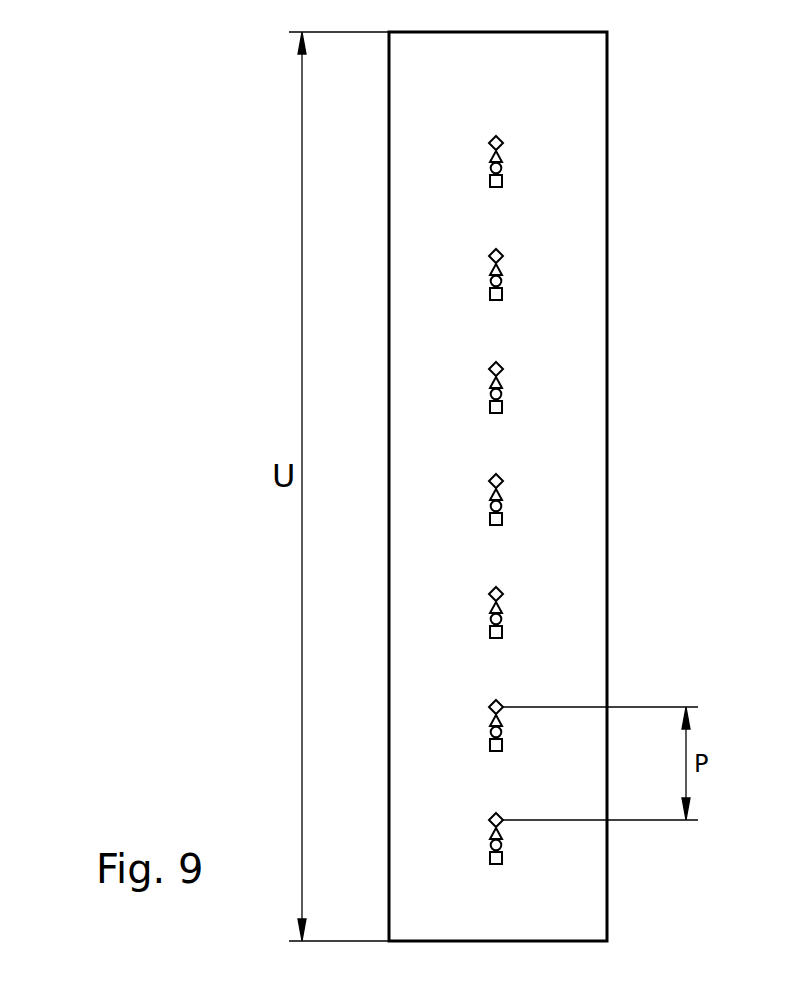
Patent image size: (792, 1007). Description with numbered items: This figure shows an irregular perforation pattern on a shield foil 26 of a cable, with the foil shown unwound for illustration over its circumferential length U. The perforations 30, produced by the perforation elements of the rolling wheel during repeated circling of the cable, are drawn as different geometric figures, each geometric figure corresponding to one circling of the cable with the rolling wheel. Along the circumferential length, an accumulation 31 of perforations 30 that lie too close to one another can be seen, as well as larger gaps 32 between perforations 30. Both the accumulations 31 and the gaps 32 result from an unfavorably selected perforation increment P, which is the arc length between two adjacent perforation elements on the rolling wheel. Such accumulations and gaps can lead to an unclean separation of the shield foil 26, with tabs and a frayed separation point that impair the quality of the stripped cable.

The shield foil 26 is at (607, 119).
The perforations 30 is at (520, 260).
The accumulation of perforations 31 is at (532, 395).
The gaps between perforations 32 is at (505, 562).